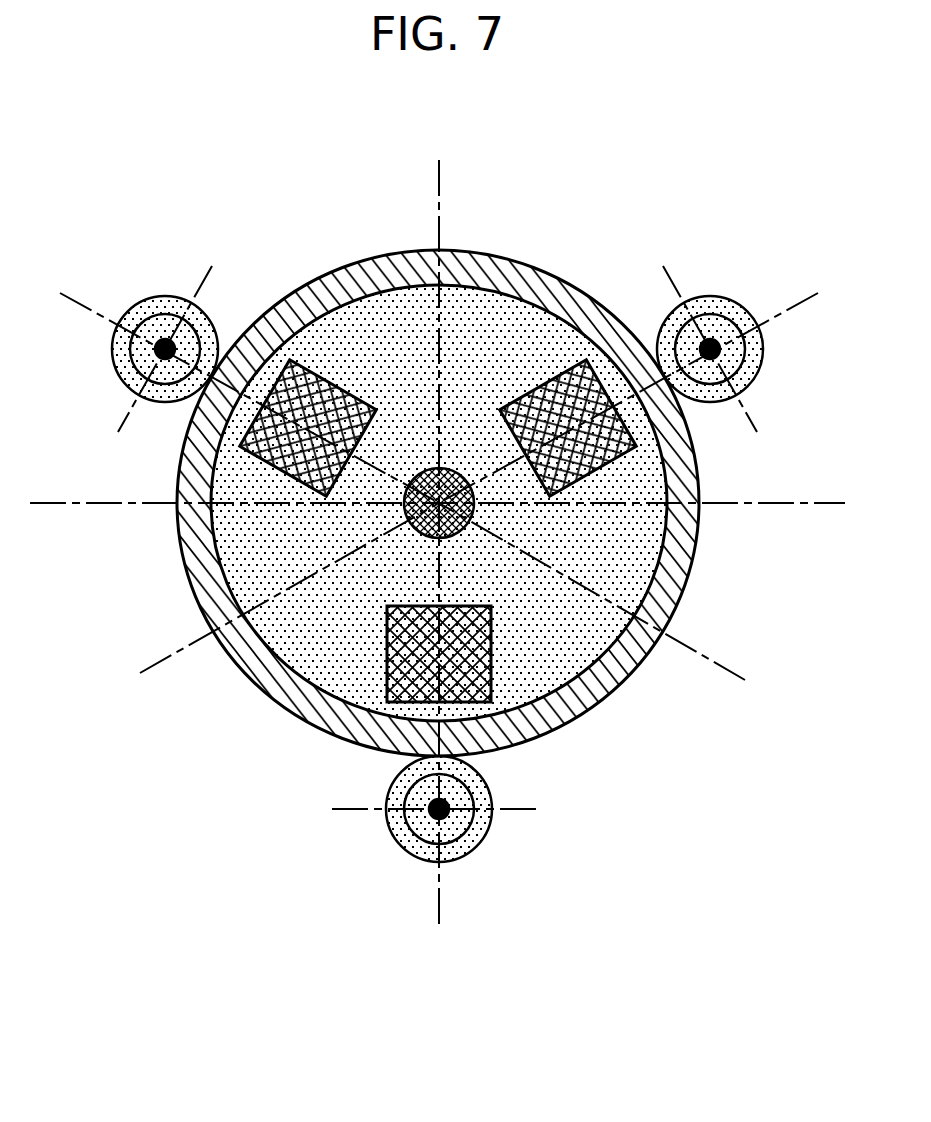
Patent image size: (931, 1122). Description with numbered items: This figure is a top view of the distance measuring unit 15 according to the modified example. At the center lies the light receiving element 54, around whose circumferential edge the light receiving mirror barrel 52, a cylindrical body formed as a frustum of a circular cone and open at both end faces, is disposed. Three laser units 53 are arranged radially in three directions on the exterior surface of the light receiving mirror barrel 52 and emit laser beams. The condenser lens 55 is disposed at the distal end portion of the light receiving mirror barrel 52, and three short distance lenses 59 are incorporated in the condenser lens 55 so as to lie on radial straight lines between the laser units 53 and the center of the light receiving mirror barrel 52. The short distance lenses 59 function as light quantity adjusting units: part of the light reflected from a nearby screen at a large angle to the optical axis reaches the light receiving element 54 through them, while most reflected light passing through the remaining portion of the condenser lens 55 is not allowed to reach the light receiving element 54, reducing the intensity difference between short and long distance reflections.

The distance measuring unit 15 is at (188, 172).
The light receiving mirror barrel 52 is at (293, 692).
The laser units 53 is at (163, 305).
The light receiving element 54 is at (428, 512).
The condenser lens 55 is at (573, 645).
The short distance lenses 59 is at (562, 403).